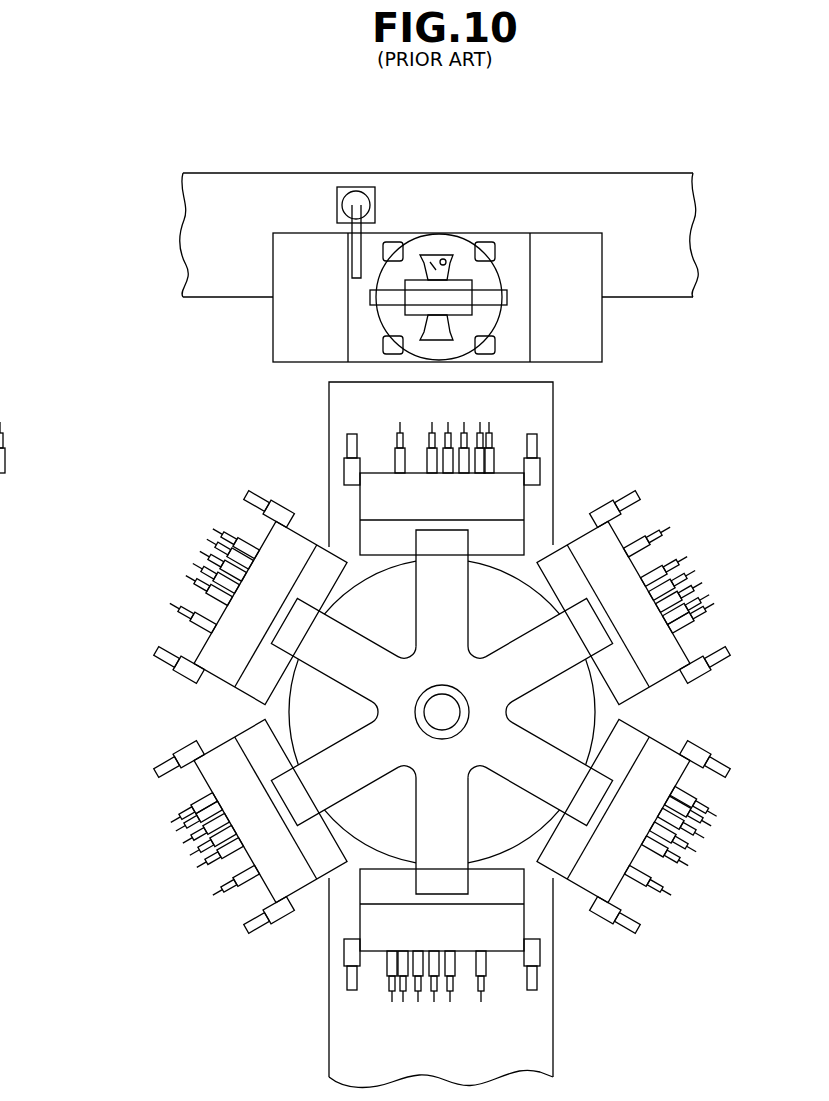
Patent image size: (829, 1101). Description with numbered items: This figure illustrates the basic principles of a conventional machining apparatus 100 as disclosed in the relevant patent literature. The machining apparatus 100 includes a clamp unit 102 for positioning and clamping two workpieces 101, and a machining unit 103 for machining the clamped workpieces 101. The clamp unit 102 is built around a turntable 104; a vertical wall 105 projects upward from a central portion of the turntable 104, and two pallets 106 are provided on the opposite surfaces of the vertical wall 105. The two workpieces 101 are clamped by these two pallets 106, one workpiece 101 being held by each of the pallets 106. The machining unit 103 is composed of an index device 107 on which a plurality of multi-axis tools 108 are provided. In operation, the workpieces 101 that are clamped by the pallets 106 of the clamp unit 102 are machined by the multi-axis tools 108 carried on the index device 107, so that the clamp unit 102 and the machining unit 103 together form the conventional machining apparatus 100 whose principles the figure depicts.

The machining apparatus 100 is at (150, 143).
The workpiece 101 is at (438, 256).
The clamp unit 102 is at (240, 254).
The machining unit 103 is at (156, 692).
The turntable 104 is at (378, 312).
The vertical wall 105 is at (370, 297).
The pallet 106 is at (465, 278).
The index device 107 is at (338, 690).
The multi-axis tool 108 is at (503, 470).